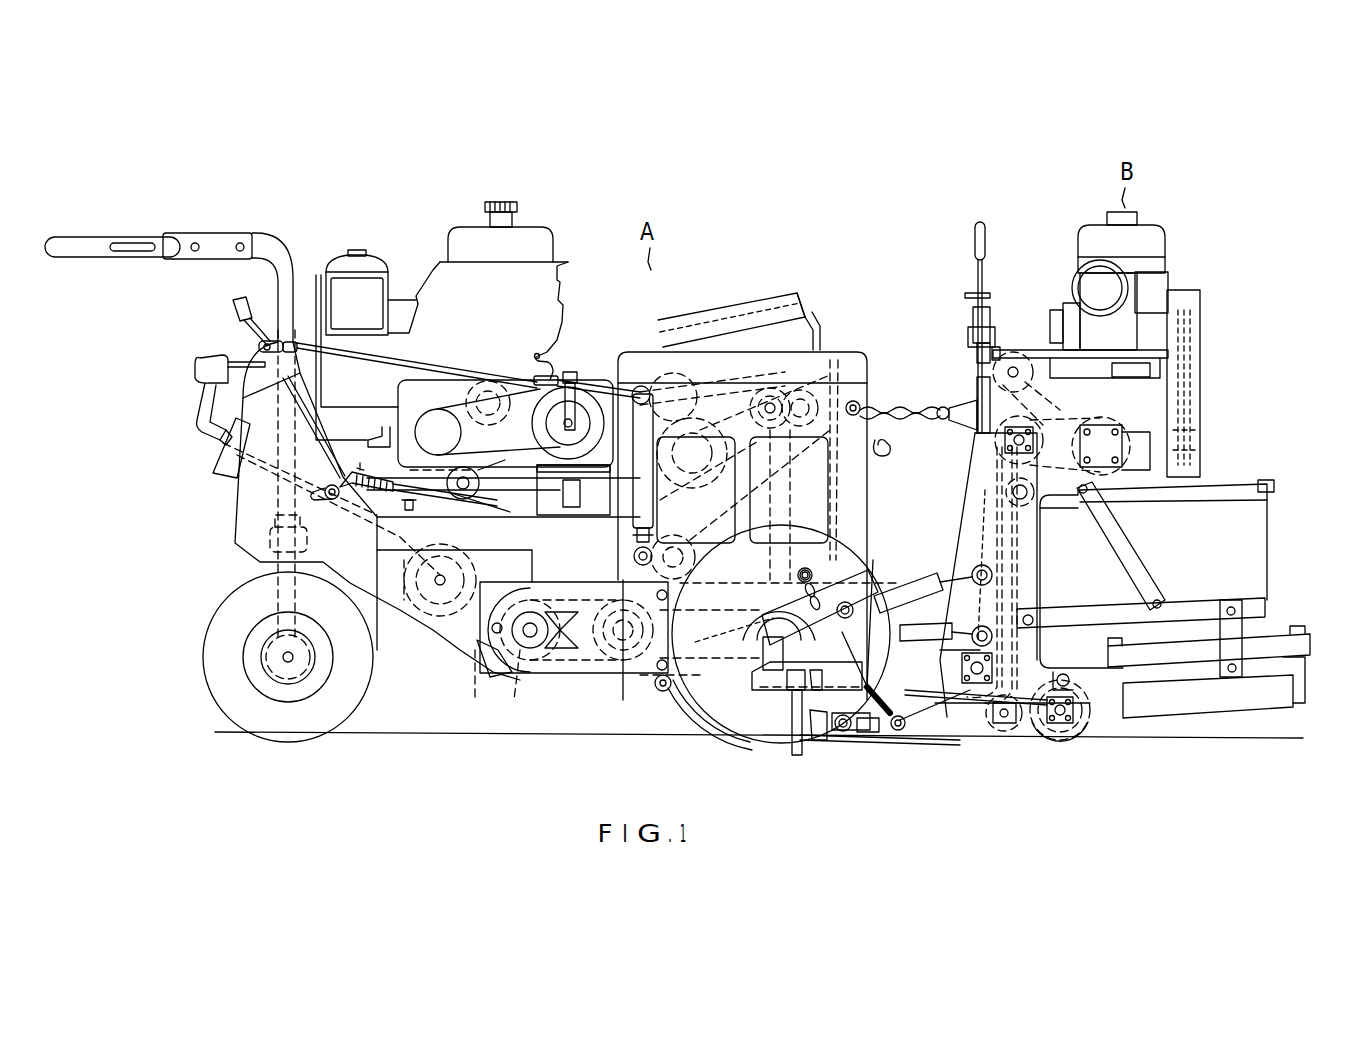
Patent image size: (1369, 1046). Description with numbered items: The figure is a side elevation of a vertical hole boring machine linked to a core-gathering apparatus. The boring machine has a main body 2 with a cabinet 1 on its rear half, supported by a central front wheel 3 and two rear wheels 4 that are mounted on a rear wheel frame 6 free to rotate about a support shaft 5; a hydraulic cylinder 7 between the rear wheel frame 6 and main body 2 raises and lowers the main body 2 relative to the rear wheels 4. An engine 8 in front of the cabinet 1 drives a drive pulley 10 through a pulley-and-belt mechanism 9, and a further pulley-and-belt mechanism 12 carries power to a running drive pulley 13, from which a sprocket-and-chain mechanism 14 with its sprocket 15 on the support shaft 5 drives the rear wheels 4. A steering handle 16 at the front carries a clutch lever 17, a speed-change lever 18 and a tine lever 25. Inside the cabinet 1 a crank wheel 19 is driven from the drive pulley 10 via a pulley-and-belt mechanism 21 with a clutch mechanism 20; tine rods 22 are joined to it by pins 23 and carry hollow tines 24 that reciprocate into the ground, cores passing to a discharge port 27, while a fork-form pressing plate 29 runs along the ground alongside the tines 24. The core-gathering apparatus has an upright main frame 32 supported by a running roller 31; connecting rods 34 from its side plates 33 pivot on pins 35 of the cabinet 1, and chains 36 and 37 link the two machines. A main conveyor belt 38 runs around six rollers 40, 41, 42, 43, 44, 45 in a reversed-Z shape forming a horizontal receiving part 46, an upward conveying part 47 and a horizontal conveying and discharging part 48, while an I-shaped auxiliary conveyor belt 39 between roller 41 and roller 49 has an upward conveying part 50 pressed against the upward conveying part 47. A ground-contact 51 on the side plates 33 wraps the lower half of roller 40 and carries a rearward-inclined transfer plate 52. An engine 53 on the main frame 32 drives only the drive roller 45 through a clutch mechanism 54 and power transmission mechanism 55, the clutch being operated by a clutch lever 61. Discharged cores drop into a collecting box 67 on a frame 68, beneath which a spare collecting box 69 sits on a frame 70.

The cabinet 1 is at (855, 368).
The main body 2 is at (447, 643).
The front wheel 3 is at (352, 692).
The rear wheels 4 is at (733, 722).
The support shaft 5 is at (532, 637).
The rear wheel frame 6 is at (611, 675).
The hydraulic cylinder 7 is at (630, 522).
The engine 8 is at (551, 308).
The pulley-and-belt mechanism 9 is at (516, 395).
The drive pulley 10 is at (505, 423).
The pulley-and-belt mechanism 12 is at (405, 495).
The running drive pulley 13 is at (420, 618).
The sprocket-and-chain mechanism 14 is at (475, 678).
The sprocket 15 is at (510, 685).
The steering handle 16 is at (146, 240).
The clutch lever 17 is at (210, 356).
The speed-change lever 18 is at (202, 392).
The crank wheel 19 is at (830, 378).
The clutch mechanism 20 is at (480, 387).
The pulley-and-belt mechanism 21 is at (591, 392).
The tine rods 22 is at (808, 508).
The pins 23 is at (768, 378).
The tines 24 is at (788, 718).
The tine lever 25 is at (241, 297).
The discharge port 27 is at (815, 682).
The pressing plate 29 is at (700, 722).
The running roller 31 is at (1060, 738).
The main frame 32 is at (1024, 340).
The side plates 33 is at (970, 545).
The connecting rods 34 is at (897, 593).
The pins 35 is at (826, 590).
The chain 36 is at (917, 712).
The chain 37 is at (915, 418).
The main conveyor belt 38 is at (1030, 551).
The auxiliary conveyor belt 39 is at (973, 501).
The roller 40 is at (839, 736).
The roller 41 is at (968, 740).
The roller 42 is at (998, 740).
The roller 43 is at (1028, 418).
The roller 44 is at (1035, 500).
The drive roller 45 is at (1115, 422).
The horizontal receiving part 46 is at (962, 665).
The upward conveying part 47 is at (973, 528).
The horizontal conveying and discharging part 48 is at (1077, 412).
The roller 49 is at (990, 375).
The upward conveying part 50 is at (984, 482).
The ground-contact 51 is at (870, 742).
The transfer plate 52 is at (816, 740).
The engine 53 is at (1155, 266).
The clutch mechanism 54 is at (1200, 360).
The power transmission mechanism 55 is at (1195, 403).
The clutch lever 61 is at (984, 275).
The collecting box 67 is at (1215, 492).
The frame 68 is at (1262, 605).
The spare collecting box 69 is at (1292, 630).
The frame 70 is at (1290, 693).